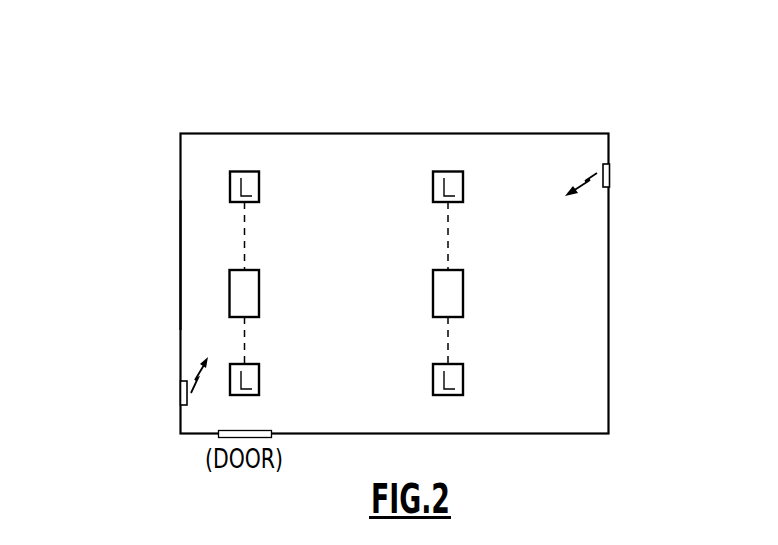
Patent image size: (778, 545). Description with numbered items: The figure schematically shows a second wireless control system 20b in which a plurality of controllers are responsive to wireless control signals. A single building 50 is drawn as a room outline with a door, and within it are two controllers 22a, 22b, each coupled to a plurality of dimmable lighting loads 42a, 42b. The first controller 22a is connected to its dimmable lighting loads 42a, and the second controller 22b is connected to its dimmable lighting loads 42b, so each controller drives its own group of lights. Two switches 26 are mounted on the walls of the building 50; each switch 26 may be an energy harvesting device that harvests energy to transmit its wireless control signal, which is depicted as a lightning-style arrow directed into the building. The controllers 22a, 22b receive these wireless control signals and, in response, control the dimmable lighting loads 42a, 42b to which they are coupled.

The room / space 20b is at (137, 106).
The building 50 is at (180, 266).
The switch 26 is at (610, 178).
The dimmable lighting load 42a is at (259, 185).
The dimmable lighting load 42b is at (463, 185).
The controller 22a is at (259, 290).
The controller 22b is at (463, 290).